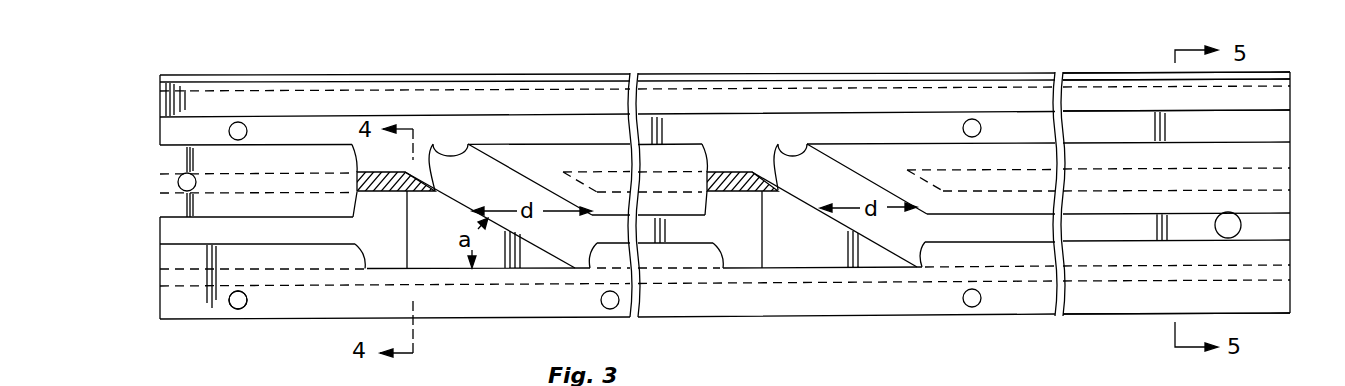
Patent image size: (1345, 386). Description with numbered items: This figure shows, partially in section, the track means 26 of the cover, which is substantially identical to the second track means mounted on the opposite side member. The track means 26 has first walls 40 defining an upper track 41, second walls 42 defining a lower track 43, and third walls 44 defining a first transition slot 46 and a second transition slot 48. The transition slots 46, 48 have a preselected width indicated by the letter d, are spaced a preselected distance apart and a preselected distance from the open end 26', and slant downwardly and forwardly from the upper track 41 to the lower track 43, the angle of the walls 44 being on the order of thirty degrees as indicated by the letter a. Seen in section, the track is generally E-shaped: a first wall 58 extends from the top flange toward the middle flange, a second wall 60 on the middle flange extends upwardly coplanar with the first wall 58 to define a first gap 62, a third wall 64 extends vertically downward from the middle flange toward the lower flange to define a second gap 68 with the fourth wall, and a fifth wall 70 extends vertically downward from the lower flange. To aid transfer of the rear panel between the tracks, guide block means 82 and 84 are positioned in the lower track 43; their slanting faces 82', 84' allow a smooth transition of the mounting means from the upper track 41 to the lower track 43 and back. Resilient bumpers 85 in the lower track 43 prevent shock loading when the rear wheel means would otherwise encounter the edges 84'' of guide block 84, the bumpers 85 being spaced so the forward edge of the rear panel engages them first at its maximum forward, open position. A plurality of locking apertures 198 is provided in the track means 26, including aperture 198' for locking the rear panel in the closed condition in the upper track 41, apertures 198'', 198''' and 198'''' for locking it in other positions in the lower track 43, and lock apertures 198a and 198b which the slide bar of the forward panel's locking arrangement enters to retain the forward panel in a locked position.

The track means 26 is at (846, 63).
The open end 26' is at (363, 303).
The first walls 40 is at (163, 126).
The upper track 41 is at (213, 141).
The second walls 42 is at (173, 243).
The lower track 43 is at (217, 243).
The third walls 44 is at (470, 141).
The first transition slot 46 is at (500, 191).
The second transition slot 48 is at (832, 191).
The first wall 58 is at (1090, 98).
The second wall 60 is at (1125, 133).
The first gap 62 is at (568, 140).
The third wall 64 is at (1100, 203).
The second gap 68 is at (328, 241).
The fifth wall 70 is at (1125, 297).
The guide block means 82 is at (478, 253).
The slanting face 82' is at (493, 220).
The guide block means 84 is at (822, 272).
The slanting face 84' is at (834, 219).
The edges 84'' is at (730, 229).
The resilient bumpers 85 is at (1242, 228).
The locking apertures 198 is at (276, 323).
The aperture 198' is at (142, 182).
The locking aperture 198'' is at (207, 322).
The locking aperture 198''' is at (558, 320).
The rivet hole 198'''' is at (998, 322).
The lock aperture 198a is at (240, 121).
The lock aperture 198b is at (972, 118).